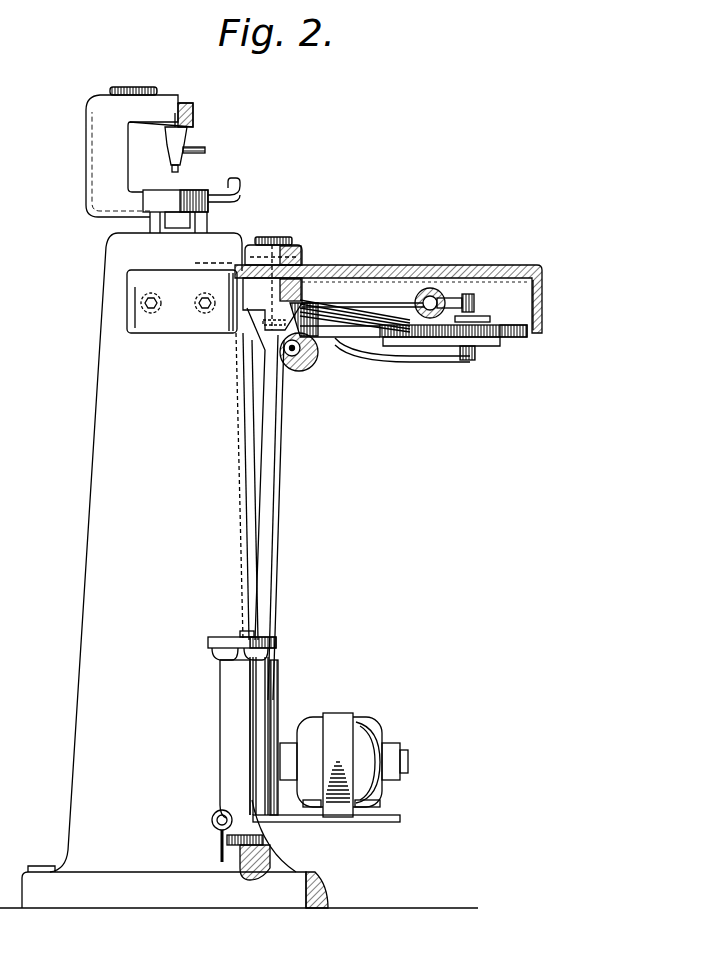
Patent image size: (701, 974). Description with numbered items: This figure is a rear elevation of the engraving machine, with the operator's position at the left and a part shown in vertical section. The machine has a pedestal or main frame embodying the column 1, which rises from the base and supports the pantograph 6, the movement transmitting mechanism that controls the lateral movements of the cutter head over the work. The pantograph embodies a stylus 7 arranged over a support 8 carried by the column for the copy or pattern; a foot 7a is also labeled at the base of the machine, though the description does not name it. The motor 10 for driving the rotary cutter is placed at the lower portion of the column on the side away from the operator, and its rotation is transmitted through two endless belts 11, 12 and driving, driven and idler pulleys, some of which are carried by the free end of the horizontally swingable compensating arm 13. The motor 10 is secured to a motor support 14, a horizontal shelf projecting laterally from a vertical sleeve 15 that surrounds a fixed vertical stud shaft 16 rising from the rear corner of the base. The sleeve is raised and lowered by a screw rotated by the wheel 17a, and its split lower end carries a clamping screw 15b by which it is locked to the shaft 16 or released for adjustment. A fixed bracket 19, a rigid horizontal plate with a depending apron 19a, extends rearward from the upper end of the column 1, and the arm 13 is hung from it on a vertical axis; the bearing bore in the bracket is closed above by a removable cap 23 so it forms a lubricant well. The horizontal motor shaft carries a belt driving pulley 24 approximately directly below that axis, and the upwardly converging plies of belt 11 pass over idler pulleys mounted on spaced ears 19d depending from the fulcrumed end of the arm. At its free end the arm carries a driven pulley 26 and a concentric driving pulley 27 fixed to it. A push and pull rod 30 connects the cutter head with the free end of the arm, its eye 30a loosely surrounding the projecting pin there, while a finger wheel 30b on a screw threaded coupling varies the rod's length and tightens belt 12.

The column 1 is at (105, 557).
The pantograph 6 is at (190, 150).
The stylus 7 is at (172, 167).
The base foot 7a is at (325, 888).
The support 8 is at (192, 190).
The motor 10 is at (337, 720).
The endless belt 11 is at (346, 344).
The endless belt 12 is at (394, 320).
The compensating arm 13 is at (408, 353).
The motor support 14 is at (403, 818).
The sleeve 15 is at (232, 743).
The clamping screw 15b is at (213, 822).
The stud shaft 16 is at (245, 872).
The wheel 17a is at (210, 646).
The bracket 19 is at (497, 265).
The apron 19a is at (543, 298).
The ears 19d is at (285, 320).
The cap 23 is at (275, 237).
The belt driving pulley 24 is at (278, 717).
The driven belt pulley 26 is at (493, 357).
The driving belt pulley 27 is at (517, 338).
The push and pull rod 30 is at (360, 300).
The eye 30a is at (476, 305).
The finger wheel 30b is at (430, 288).